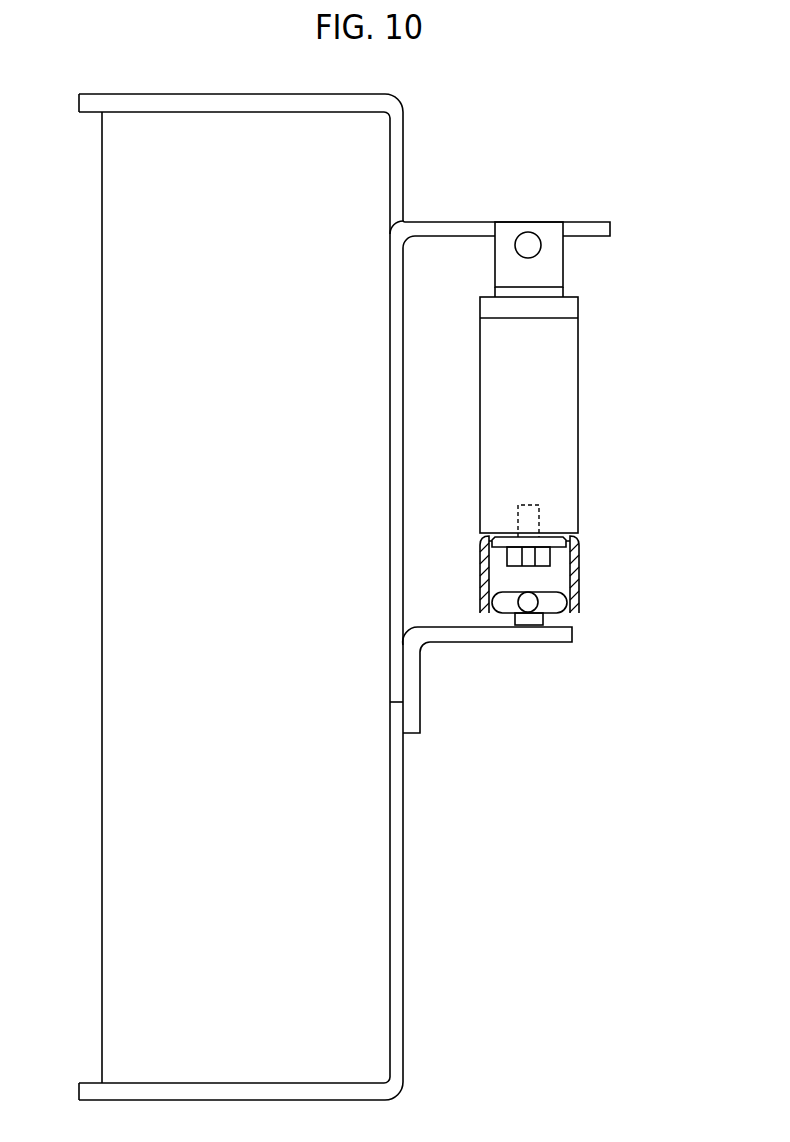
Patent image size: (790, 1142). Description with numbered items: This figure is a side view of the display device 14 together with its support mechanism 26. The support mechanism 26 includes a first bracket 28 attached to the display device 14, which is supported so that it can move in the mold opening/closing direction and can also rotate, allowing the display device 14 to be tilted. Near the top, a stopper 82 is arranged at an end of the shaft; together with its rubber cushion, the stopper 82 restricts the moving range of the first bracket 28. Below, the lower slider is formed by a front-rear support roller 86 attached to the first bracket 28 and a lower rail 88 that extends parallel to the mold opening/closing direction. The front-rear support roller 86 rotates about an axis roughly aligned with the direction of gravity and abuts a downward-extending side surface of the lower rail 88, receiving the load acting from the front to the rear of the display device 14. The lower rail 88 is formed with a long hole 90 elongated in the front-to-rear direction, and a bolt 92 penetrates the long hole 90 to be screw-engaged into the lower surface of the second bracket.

The display device 14 is at (130, 332).
The first bracket 28 is at (397, 125).
The support mechanism 26 is at (631, 306).
The stopper 82 is at (555, 271).
The long hole 90 is at (548, 534).
The lower rail 88 is at (574, 585).
The bolt 92 is at (515, 553).
The front-rear support roller 86 is at (549, 608).